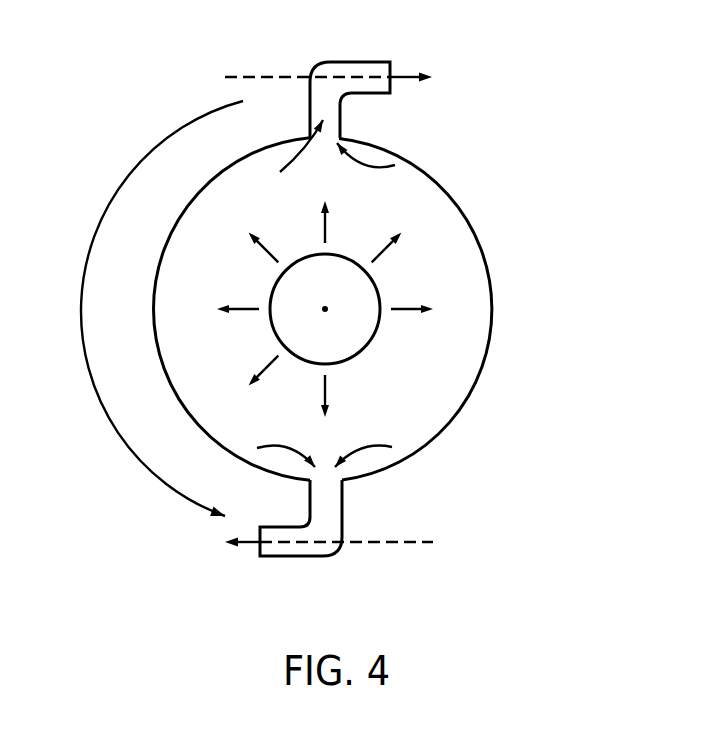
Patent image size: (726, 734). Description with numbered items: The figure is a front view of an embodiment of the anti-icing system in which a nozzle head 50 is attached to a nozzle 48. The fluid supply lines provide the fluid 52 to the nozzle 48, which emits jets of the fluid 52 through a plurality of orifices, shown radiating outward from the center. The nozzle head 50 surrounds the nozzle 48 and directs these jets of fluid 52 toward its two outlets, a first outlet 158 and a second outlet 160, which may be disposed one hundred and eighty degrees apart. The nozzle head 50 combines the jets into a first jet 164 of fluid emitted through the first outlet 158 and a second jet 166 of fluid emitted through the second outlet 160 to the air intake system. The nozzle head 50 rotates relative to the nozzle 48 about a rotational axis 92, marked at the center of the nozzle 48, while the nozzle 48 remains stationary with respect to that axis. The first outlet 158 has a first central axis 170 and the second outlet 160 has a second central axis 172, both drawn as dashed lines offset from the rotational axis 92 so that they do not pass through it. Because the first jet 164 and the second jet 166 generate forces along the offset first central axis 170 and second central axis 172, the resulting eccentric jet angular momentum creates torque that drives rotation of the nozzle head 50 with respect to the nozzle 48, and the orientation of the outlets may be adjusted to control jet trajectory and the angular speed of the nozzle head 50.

The nozzle head 50 is at (455, 190).
The nozzle 48 is at (357, 290).
The rotational axis 92 is at (345, 323).
The first outlet 158 is at (347, 70).
The second outlet 160 is at (323, 520).
The first jet 164 is at (410, 75).
The second jet 166 is at (248, 543).
The first central axis 170 is at (250, 76).
The second central axis 172 is at (396, 543).
The fluid 52 is at (385, 448).